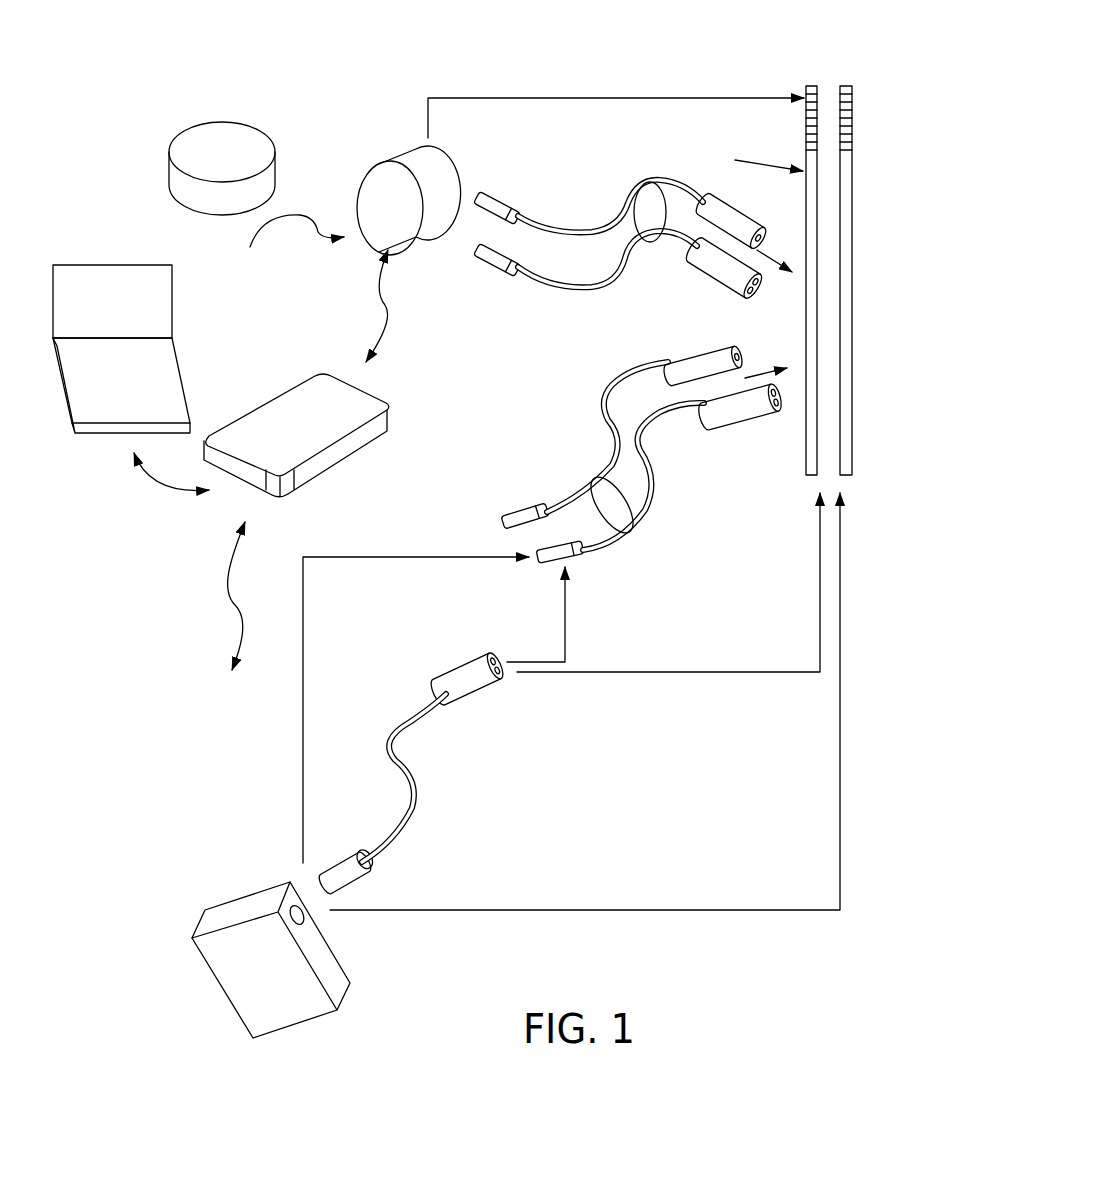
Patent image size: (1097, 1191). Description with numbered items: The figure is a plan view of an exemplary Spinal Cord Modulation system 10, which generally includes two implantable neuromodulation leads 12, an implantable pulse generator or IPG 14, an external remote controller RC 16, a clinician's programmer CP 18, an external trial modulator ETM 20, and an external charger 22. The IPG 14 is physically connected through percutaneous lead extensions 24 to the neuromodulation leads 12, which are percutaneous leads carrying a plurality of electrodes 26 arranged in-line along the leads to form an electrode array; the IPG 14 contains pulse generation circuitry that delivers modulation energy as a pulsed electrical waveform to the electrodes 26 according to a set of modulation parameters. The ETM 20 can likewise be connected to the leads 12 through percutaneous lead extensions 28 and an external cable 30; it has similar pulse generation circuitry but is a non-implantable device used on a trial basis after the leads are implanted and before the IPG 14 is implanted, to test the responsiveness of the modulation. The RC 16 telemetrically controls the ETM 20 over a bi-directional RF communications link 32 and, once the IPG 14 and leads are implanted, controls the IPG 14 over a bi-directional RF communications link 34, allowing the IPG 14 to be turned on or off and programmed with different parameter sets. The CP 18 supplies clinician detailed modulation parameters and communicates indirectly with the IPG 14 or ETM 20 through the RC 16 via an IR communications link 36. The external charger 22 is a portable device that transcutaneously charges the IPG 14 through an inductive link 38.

The SCM system 10 is at (591, 49).
The implantable neuromodulation leads 12 is at (828, 82).
The implantable pulse generator (IPG) 14 is at (386, 153).
The external remote controller (RC) 16 is at (308, 392).
The clinician's programmer (CP) 18 is at (97, 282).
The external trial modulator (ETM) 20 is at (241, 910).
The external charger 22 is at (220, 132).
The percutaneous lead extensions 24 is at (646, 180).
The electrodes 26 is at (852, 157).
The percutaneous lead extensions 28 is at (588, 485).
The external cable 30 is at (410, 712).
The bi-directional RF communications link 32 is at (240, 642).
The bi-directional RF communications link 34 is at (385, 330).
The IR communications link 36 is at (160, 480).
The inductive link 38 is at (285, 247).